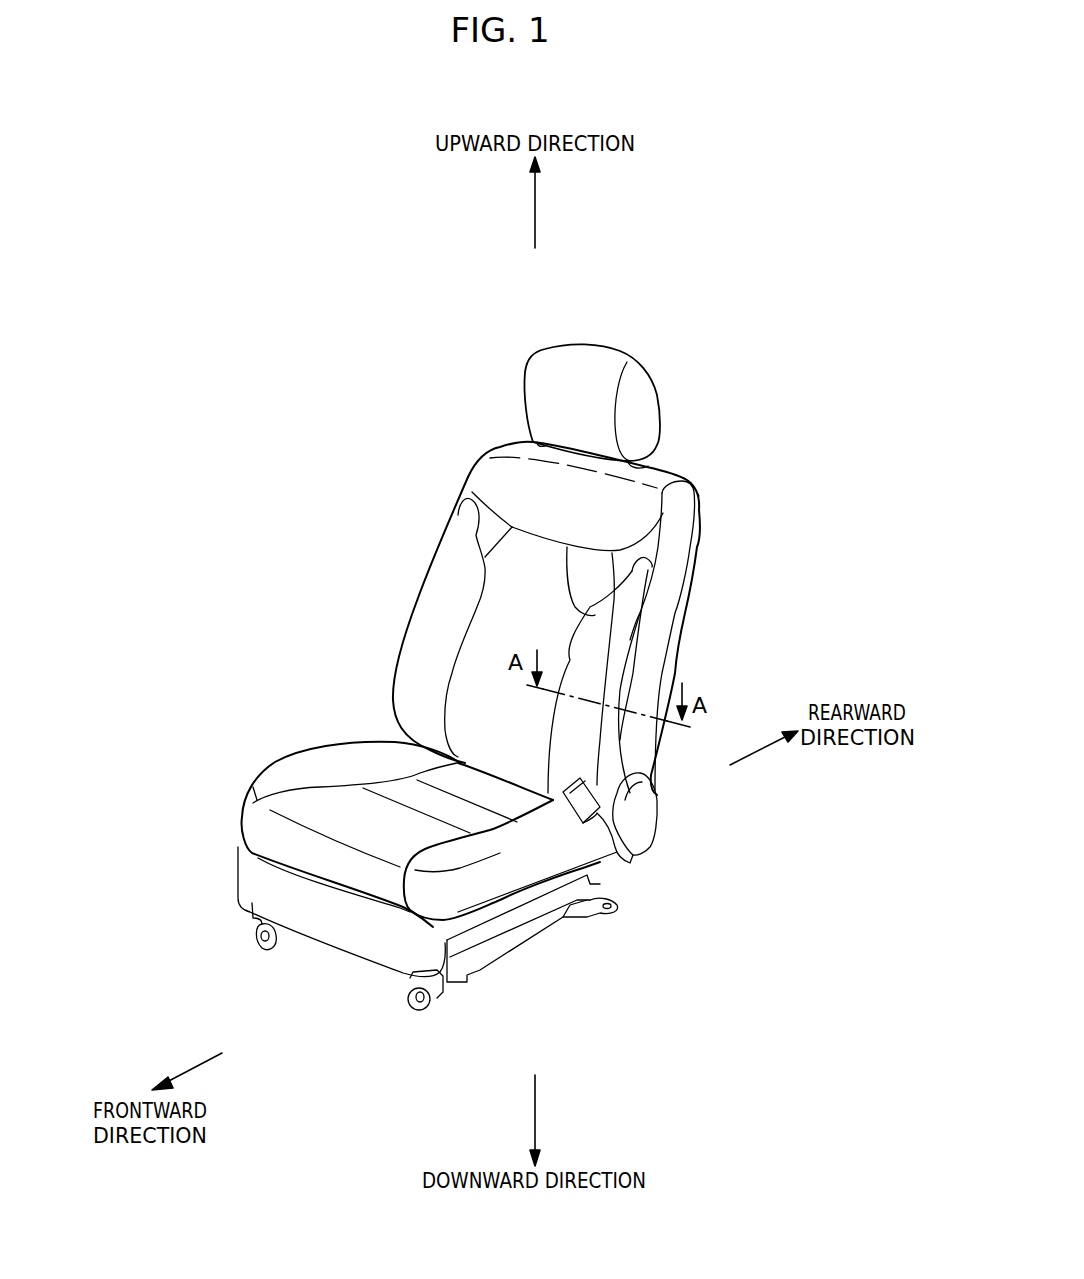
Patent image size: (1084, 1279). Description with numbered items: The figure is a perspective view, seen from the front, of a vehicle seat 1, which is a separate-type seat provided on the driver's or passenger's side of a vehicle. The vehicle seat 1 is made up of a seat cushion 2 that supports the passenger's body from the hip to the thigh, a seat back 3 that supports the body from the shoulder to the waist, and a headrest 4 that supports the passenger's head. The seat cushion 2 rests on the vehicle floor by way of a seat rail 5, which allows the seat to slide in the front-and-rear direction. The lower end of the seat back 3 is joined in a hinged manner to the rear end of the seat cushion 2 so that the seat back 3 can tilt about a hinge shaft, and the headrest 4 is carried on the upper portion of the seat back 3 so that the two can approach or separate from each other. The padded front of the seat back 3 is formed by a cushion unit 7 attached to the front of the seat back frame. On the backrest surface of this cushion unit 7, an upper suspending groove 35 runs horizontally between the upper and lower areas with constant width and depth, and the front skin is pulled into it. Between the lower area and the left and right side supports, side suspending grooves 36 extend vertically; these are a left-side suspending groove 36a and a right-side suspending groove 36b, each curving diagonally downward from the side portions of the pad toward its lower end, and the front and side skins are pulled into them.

The vehicle seat 1 is at (487, 340).
The seat cushion 2 is at (508, 868).
The seat back 3 is at (622, 503).
The headrest 4 is at (601, 358).
The seat rail 5 is at (260, 952).
The cushion unit 7 is at (690, 477).
The upper suspending groove 35 is at (636, 623).
The side suspending grooves 36 is at (583, 625).
The left-side suspending groove 36a is at (463, 496).
The right-side suspending groove 36b is at (652, 567).